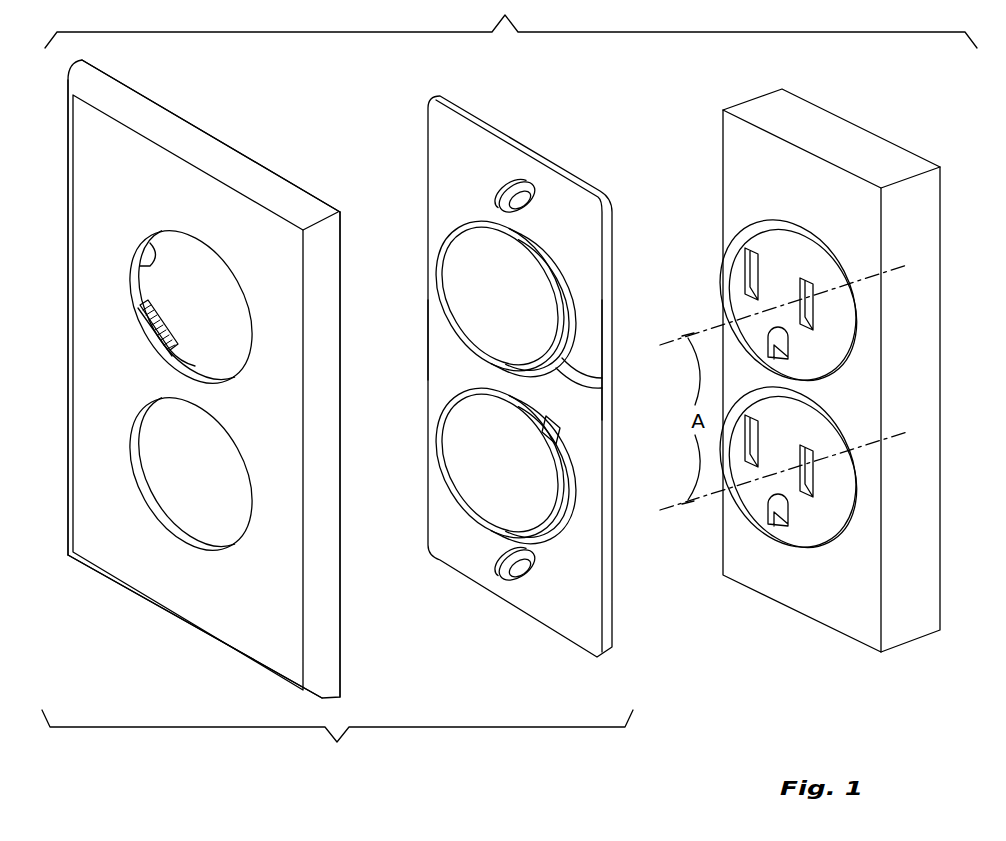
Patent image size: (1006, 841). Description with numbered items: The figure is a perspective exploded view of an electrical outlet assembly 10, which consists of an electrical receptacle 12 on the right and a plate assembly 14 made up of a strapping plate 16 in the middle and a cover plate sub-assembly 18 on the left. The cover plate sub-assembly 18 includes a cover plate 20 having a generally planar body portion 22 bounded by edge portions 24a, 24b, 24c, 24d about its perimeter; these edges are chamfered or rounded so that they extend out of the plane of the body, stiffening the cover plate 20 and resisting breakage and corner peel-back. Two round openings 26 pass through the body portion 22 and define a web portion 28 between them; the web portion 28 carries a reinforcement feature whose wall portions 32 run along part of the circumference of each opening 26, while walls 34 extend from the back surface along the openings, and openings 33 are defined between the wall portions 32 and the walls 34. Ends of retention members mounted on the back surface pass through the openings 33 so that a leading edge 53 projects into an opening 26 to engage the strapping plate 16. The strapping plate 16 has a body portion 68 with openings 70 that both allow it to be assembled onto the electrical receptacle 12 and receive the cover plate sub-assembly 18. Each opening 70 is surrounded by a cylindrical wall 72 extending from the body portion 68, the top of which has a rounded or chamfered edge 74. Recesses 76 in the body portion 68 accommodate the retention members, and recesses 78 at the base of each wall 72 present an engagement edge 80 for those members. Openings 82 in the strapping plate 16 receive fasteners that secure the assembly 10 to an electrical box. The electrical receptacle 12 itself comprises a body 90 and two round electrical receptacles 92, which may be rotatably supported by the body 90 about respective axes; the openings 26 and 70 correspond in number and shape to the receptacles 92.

The electrical outlet assembly 10 is at (511, 24).
The electrical receptacle 12 is at (868, 118).
The plate assembly 14 is at (337, 741).
The strapping plate 16 is at (550, 132).
The cover plate sub-assembly 18 is at (243, 112).
The cover plate 20 is at (268, 188).
The body portion 22 is at (278, 285).
The edge portion 24a is at (138, 92).
The edge portion 24b is at (342, 375).
The edge portion 24c is at (178, 626).
The edge portion 24d is at (68, 292).
The openings 26 is at (190, 262).
The web portion 28 is at (180, 432).
The wall portions 32 is at (192, 360).
The openings 33 is at (178, 334).
The walls 34 is at (150, 262).
The leading edge 53 is at (160, 310).
The body portion 68 is at (576, 195).
The openings 70 is at (498, 280).
The cylindrical wall 72 is at (540, 252).
The rounded or chamfered edge 74 is at (548, 292).
The recesses 76 is at (444, 337).
The recesses 78 is at (572, 375).
The engagement edge 80 is at (543, 362).
The openings 82 is at (512, 186).
The body 90 is at (930, 197).
The electrical receptacles 92 is at (816, 263).